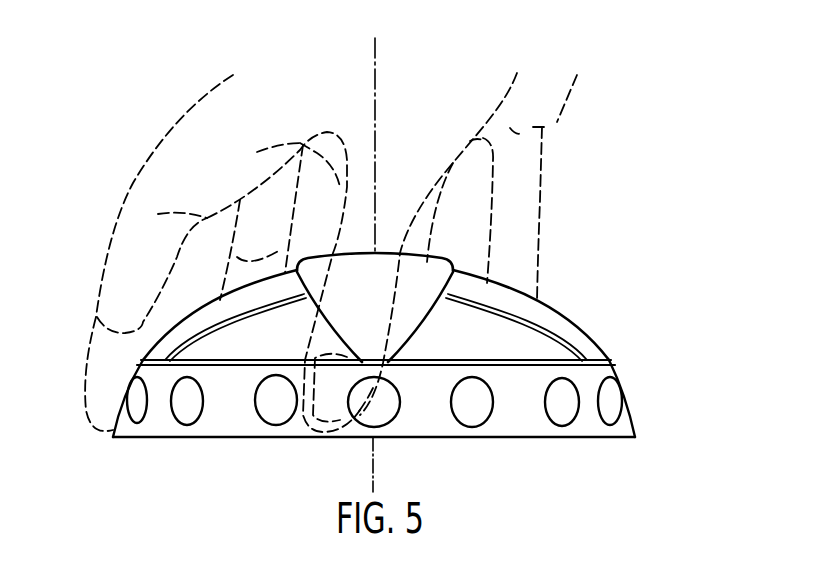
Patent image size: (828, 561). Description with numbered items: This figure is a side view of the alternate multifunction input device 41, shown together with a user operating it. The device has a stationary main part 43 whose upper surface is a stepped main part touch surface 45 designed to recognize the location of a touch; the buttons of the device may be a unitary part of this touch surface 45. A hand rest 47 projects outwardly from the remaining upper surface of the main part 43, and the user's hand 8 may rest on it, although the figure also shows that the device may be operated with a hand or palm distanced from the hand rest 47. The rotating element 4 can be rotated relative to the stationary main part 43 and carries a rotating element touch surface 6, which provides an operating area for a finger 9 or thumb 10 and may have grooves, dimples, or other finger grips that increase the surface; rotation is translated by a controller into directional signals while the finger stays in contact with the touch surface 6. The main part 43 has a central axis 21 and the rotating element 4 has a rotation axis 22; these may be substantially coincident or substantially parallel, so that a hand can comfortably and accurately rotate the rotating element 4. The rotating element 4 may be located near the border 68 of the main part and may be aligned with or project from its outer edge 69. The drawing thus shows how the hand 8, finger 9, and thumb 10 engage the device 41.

The rotating element 4 is at (226, 434).
The rotating element touch surface 6 is at (248, 434).
The user's hand 8 is at (203, 117).
The finger 9 is at (123, 238).
The thumb 10 is at (407, 173).
The central axis 21 is at (378, 57).
The rotation axis 22 is at (375, 480).
The multifunction input device 41 is at (627, 276).
The main part 43 is at (585, 277).
The main part touch surface 45 is at (557, 274).
The hand rest 47 is at (442, 253).
The border of the main part 68 is at (614, 349).
The outer edge of the main part 69 is at (622, 361).